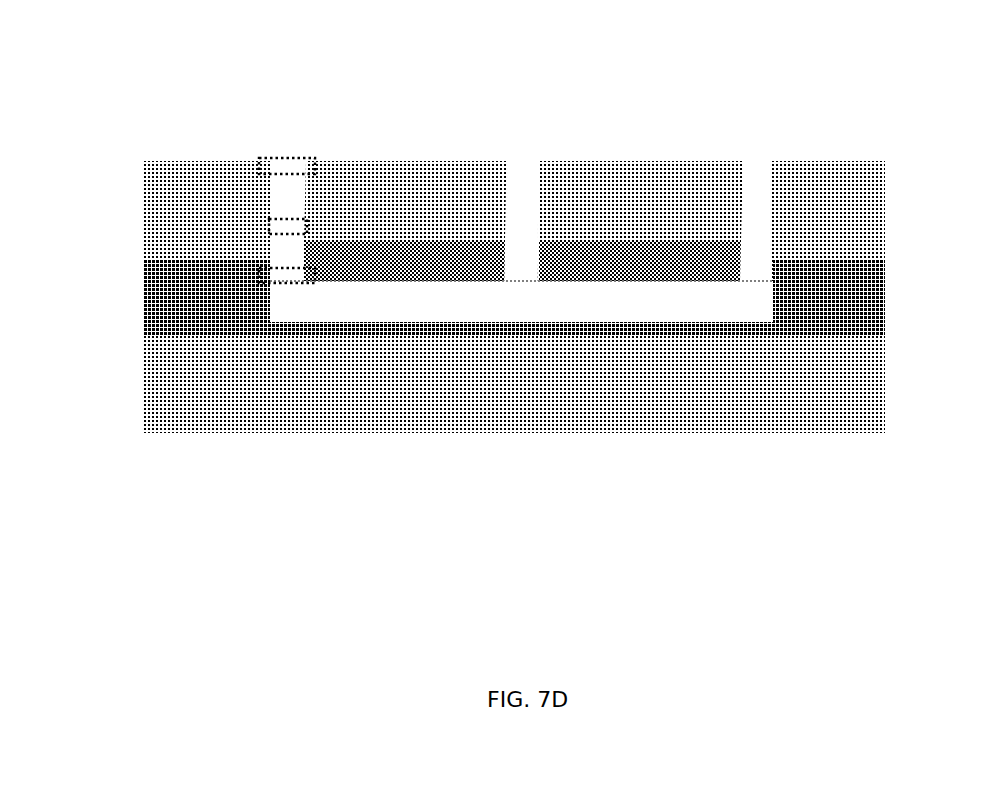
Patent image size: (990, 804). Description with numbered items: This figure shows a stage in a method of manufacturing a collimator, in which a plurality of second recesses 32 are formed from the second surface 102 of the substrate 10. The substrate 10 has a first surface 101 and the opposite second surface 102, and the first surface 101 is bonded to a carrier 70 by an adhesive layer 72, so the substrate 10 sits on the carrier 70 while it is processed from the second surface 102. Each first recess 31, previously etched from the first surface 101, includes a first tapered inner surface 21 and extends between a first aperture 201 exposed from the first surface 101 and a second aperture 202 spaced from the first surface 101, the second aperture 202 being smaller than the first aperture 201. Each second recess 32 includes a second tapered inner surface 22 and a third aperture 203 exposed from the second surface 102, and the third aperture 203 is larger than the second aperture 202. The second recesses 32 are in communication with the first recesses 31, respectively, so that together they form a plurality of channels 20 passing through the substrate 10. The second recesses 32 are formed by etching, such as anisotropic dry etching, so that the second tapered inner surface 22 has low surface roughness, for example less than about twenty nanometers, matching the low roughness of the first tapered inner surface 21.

The substrate 10 is at (678, 268).
The channel 20 is at (757, 218).
The first tapered inner surface 21 is at (538, 250).
The second tapered inner surface 22 is at (507, 192).
The first recess 31 is at (519, 265).
The second recess 32 is at (523, 165).
The carrier 70 is at (697, 382).
The adhesive layer 72 is at (172, 292).
The first surface 101 is at (795, 280).
The second surface 102 is at (790, 162).
The first aperture 201 is at (291, 283).
The second aperture 202 is at (288, 218).
The third aperture 203 is at (262, 160).